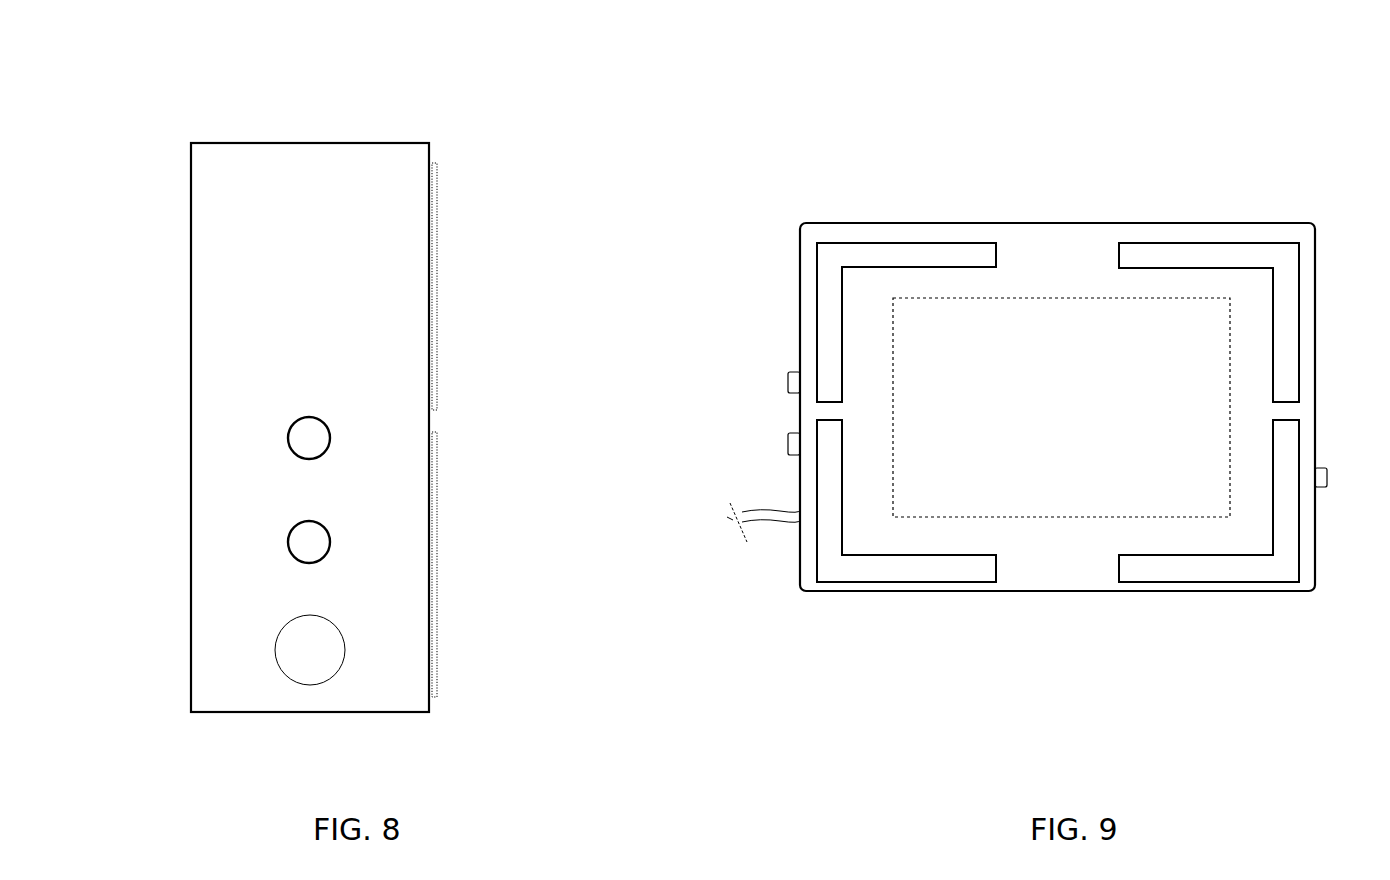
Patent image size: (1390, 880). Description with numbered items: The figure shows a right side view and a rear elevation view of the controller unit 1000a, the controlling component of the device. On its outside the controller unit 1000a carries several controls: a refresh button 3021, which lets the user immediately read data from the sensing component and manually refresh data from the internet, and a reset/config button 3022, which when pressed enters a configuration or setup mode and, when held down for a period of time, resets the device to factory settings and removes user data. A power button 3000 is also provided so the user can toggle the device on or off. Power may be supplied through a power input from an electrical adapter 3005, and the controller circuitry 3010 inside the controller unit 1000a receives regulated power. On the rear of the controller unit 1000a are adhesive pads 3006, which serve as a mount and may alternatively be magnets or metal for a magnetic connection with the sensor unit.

In FIG. 8, the controller unit 1000a is at (342, 208).
In FIG. 9, the controller unit 1000a is at (868, 227).
In FIG. 8, the refresh button 3021 is at (318, 432).
In FIG. 9, the refresh button 3021 is at (788, 382).
In FIG. 8, the reset/config button 3022 is at (318, 535).
In FIG. 9, the reset/config button 3022 is at (788, 448).
In FIG. 8, the electrical adapter 3005 is at (305, 628).
In FIG. 9, the electrical adapter 3005 is at (772, 513).
In FIG. 8, the adhesive pads 3006 is at (433, 643).
In FIG. 9, the adhesive pads 3006 is at (858, 570).
In FIG. 9, the controller circuitry 3010 is at (1018, 517).
In FIG. 9, the power button 3000 is at (1318, 478).